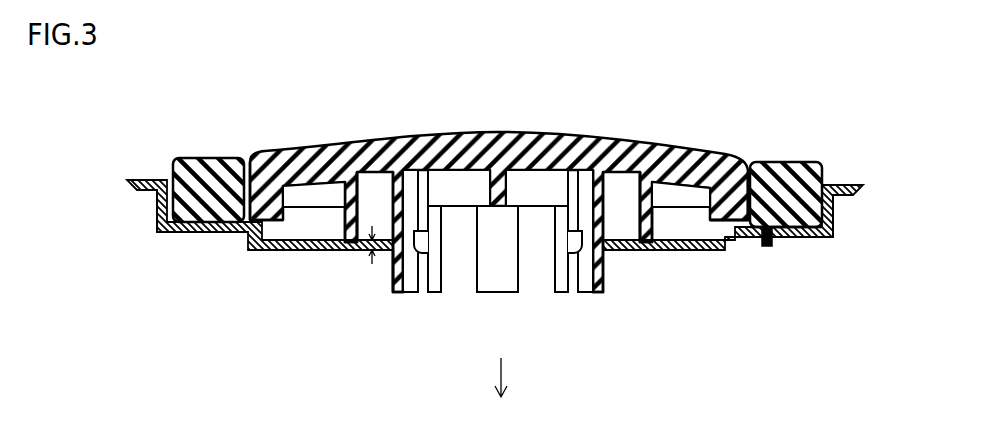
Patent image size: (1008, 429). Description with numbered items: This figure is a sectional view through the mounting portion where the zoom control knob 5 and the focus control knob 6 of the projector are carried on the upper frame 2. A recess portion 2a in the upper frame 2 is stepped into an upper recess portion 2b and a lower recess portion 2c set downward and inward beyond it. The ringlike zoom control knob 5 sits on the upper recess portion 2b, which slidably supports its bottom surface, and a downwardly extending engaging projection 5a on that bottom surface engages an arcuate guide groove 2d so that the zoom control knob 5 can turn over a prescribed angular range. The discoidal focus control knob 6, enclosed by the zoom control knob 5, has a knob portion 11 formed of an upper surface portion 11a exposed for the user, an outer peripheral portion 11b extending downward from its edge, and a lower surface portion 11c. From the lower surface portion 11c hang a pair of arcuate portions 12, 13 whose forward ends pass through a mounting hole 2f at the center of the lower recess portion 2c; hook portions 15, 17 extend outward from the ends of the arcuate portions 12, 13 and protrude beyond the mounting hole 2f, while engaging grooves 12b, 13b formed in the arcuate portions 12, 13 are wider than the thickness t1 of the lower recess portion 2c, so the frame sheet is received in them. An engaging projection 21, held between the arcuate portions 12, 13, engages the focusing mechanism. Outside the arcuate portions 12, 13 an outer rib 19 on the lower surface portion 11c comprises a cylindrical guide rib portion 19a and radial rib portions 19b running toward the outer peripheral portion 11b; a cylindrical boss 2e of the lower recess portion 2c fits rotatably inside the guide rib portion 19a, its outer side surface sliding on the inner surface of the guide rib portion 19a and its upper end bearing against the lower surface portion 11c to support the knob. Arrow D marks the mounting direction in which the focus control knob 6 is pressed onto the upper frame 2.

The upper frame 2 is at (140, 164).
The recess portion 2a is at (279, 269).
The upper recess portion 2b is at (174, 233).
The lower recess portion 2c is at (318, 252).
The guide groove 2d is at (763, 246).
The boss 2e is at (360, 231).
The mounting hole 2f is at (392, 273).
The zoom control knob 5 is at (210, 168).
The engaging projection 5a is at (772, 240).
The focus control knob 6 is at (560, 92).
The knob portion 11 is at (792, 99).
The upper surface portion 11a is at (715, 157).
The outer peripheral portion 11b is at (745, 167).
The lower surface portion 11c is at (662, 146).
The arcuate portion 12 is at (398, 295).
The engaging groove 12b is at (411, 280).
The arcuate portion 13 is at (586, 270).
The engaging groove 13b is at (568, 283).
The hook portion 15 is at (440, 262).
The hook portion 17 is at (552, 262).
The outer rib 19 is at (392, 91).
The guide rib portion 19a is at (350, 176).
The radial rib portion 19b is at (308, 190).
The engaging projection 21 is at (494, 283).
The thickness of the lower recess portion t1 is at (369, 256).
The mounting direction D is at (509, 377).